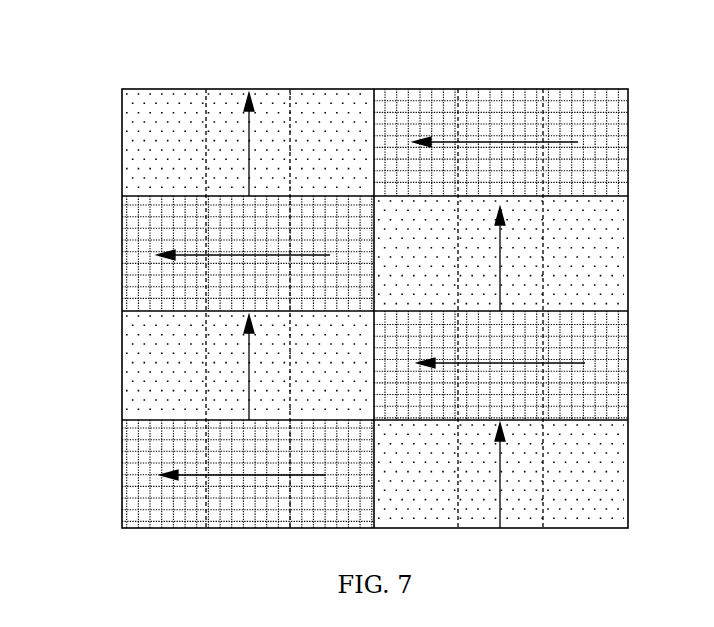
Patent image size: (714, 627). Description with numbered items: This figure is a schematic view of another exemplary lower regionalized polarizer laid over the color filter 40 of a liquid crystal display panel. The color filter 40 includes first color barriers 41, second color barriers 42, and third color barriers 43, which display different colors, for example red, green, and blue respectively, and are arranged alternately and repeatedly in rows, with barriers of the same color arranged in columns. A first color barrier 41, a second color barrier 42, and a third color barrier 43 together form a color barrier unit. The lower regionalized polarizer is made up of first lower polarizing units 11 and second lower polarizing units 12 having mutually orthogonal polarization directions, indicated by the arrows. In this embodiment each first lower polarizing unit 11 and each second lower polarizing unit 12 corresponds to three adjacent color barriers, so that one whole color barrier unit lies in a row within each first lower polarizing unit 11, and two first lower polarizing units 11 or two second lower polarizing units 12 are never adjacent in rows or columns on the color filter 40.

The color filter 40 is at (122, 258).
The first color barrier 41 is at (167, 138).
The second color barrier 42 is at (273, 128).
The third color barrier 43 is at (350, 127).
The first lower polarizing unit 11 is at (252, 142).
The second lower polarizing unit 12 is at (508, 145).